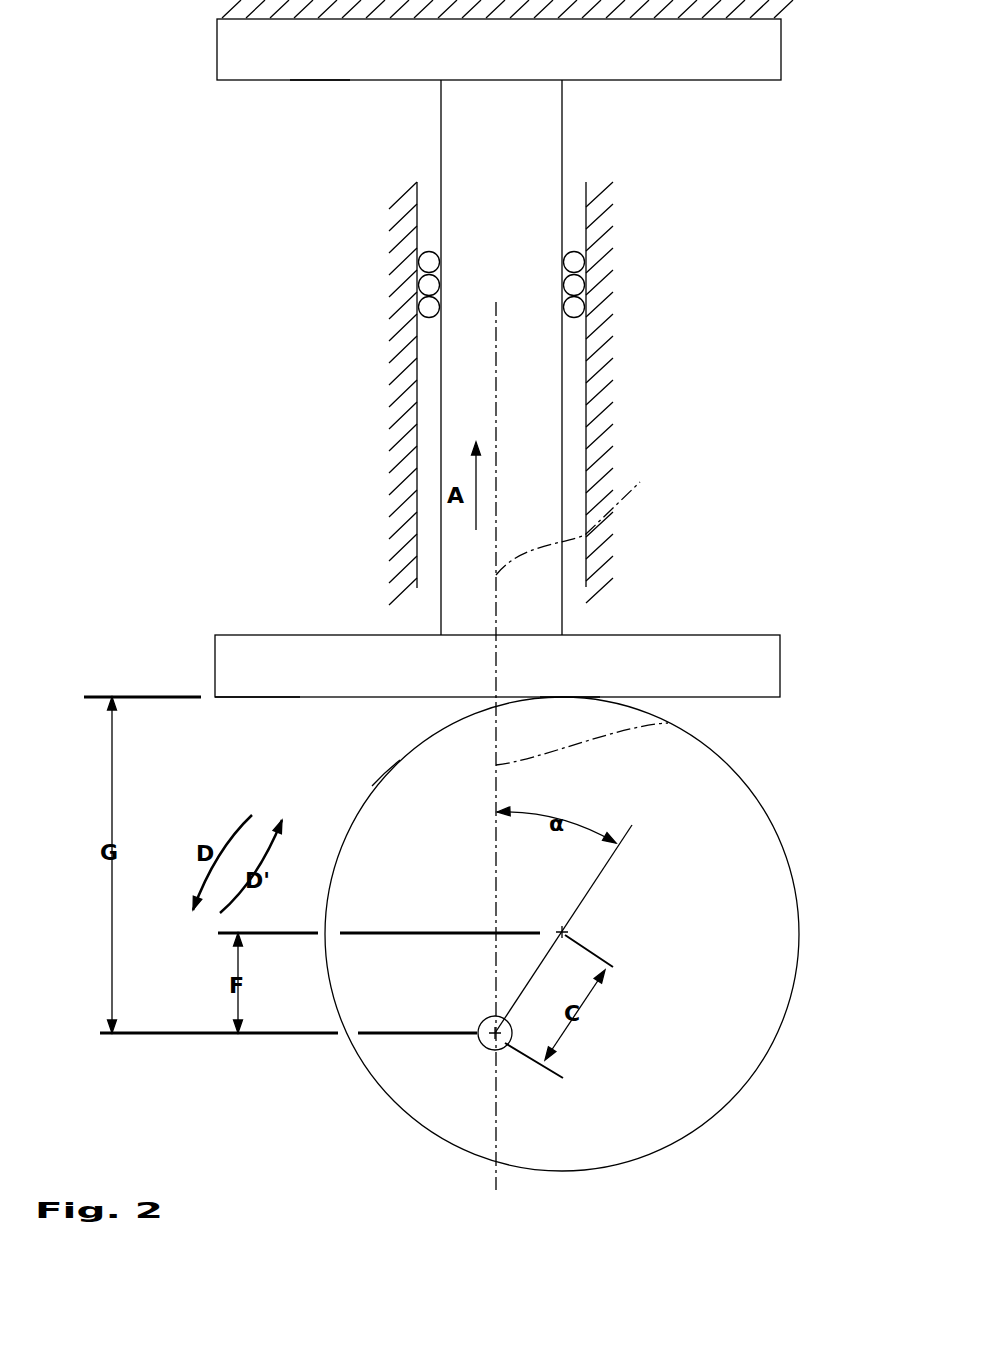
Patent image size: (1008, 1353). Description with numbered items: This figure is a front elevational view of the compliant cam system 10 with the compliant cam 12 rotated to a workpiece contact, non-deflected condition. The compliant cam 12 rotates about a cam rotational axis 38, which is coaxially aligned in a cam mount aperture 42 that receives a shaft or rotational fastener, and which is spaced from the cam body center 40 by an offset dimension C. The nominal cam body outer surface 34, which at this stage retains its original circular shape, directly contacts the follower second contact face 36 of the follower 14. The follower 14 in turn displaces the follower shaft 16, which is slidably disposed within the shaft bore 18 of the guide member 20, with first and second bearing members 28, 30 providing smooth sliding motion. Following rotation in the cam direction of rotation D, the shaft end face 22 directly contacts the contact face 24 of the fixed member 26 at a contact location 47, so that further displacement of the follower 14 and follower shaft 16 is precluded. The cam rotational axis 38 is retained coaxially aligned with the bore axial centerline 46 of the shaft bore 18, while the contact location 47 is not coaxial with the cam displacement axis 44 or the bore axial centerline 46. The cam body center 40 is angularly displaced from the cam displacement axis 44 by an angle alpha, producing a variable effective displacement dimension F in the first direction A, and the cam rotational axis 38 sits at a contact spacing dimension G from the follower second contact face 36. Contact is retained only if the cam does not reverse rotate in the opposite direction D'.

The compliant cam system 10 is at (849, 72).
The compliant cam 12 is at (760, 1015).
The follower 14 is at (698, 634).
The follower shaft 16 is at (452, 378).
The shaft bore 18 is at (595, 372).
The guide member 20 is at (585, 430).
The shaft end face 22 is at (511, 82).
The contact face 24 is at (318, 82).
The fixed member 26 is at (253, 63).
The first bearing member 28 is at (415, 290).
The second bearing member 30 is at (576, 250).
The nominal cam body outer surface 34 is at (385, 772).
The follower second contact face 36 is at (248, 700).
The cam rotational axis 38 is at (492, 1050).
The cam body center 40 is at (562, 932).
The cam mount aperture 42 is at (485, 1040).
The cam displacement axis 44 is at (672, 722).
The bore axial centerline 46 is at (582, 522).
The contact location 47 is at (566, 697).